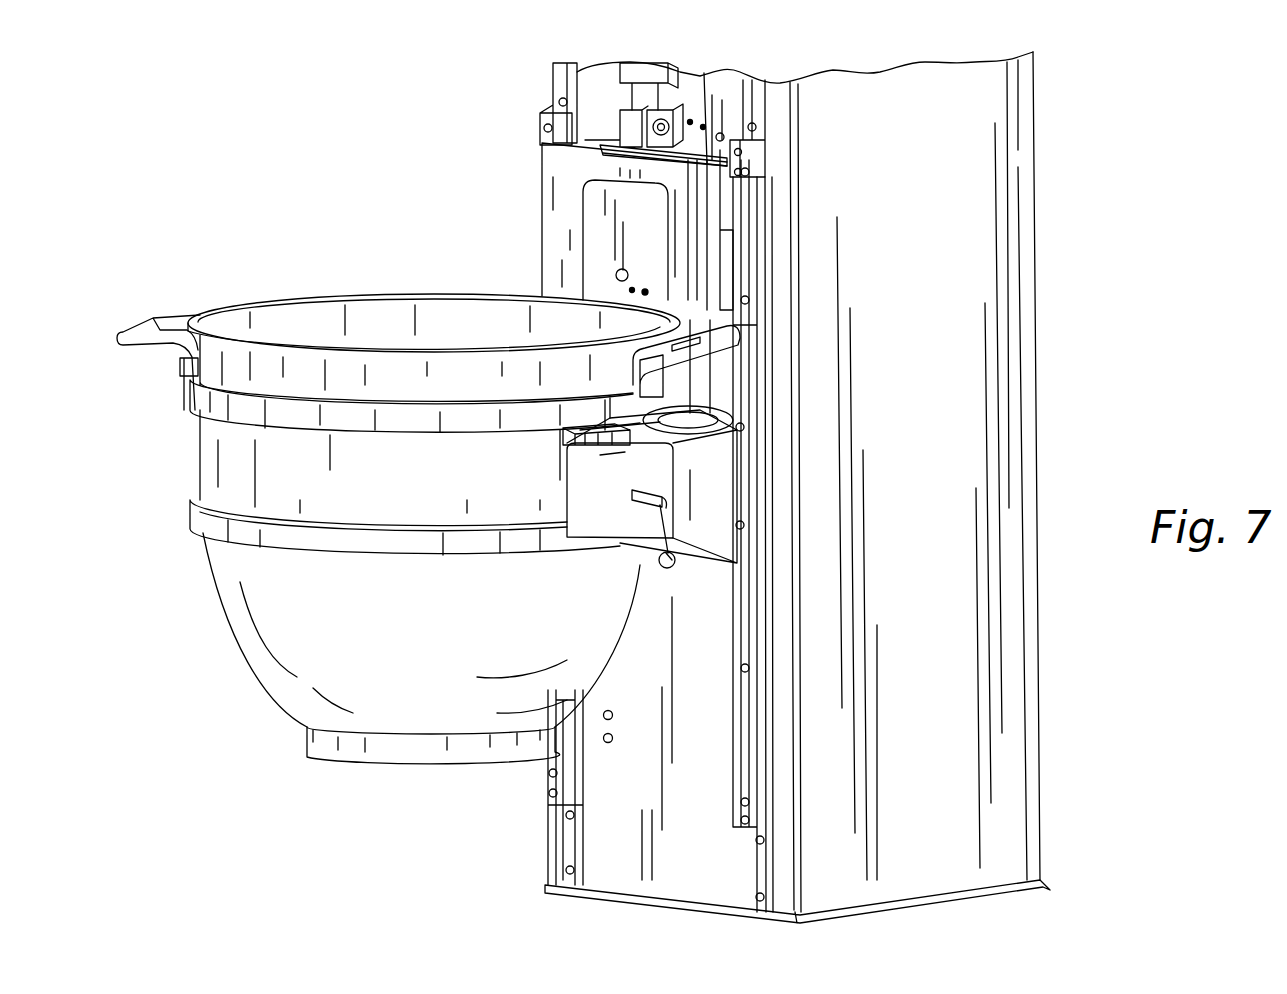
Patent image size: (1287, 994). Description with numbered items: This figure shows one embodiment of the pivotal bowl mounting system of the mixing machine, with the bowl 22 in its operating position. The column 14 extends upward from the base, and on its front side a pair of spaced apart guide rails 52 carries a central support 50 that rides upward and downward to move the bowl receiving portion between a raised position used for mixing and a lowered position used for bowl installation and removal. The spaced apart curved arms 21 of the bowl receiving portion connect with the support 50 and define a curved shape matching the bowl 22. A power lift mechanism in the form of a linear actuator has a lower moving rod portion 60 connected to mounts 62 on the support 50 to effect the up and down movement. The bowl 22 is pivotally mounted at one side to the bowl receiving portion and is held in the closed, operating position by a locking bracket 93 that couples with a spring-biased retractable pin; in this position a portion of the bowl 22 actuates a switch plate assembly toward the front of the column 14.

The column 14 is at (945, 370).
The curved arms 21 is at (710, 487).
The bowl 22 is at (272, 672).
The central support 50 is at (577, 173).
The guide rails 52 is at (548, 138).
The lower moving rod portion 60 is at (643, 93).
The mounts 62 is at (660, 140).
The locking bracket 93 is at (573, 432).